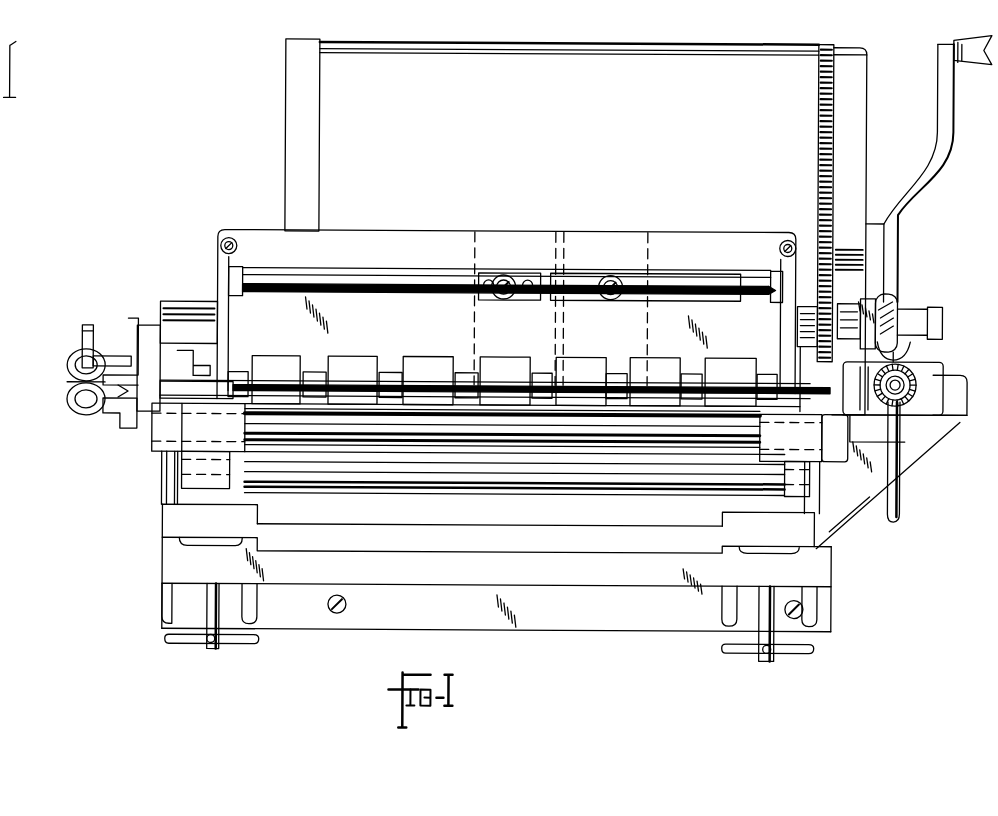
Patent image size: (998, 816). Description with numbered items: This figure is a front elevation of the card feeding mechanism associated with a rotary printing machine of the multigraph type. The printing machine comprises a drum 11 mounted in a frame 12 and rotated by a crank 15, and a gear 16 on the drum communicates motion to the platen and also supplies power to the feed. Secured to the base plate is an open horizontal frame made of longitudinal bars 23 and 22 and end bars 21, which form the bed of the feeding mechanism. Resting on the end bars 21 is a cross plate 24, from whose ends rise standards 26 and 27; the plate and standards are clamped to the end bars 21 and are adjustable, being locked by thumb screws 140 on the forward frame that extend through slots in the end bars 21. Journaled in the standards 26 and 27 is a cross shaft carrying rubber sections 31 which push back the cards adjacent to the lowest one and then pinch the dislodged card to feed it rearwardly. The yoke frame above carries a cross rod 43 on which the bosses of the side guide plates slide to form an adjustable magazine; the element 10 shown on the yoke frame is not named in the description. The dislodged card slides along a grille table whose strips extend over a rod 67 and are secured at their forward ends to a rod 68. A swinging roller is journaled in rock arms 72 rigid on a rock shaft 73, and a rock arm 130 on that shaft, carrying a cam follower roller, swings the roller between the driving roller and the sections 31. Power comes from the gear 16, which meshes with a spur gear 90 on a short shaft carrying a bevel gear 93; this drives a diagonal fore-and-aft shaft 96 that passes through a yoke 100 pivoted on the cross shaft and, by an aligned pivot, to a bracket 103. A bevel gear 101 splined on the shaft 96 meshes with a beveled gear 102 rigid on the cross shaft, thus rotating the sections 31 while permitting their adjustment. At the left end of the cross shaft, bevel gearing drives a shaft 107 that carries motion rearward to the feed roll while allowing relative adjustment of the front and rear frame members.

The frame plate 10 is at (489, 320).
The drum 11 is at (552, 136).
The frame 12 is at (849, 231).
The crank 15 is at (927, 160).
The gear 16 is at (826, 188).
The end bars 21 is at (258, 602).
The longitudinal bar 22 is at (496, 587).
The longitudinal bar 23 is at (496, 612).
The cross plate 24 is at (488, 538).
The standard 26 is at (210, 566).
The standard 27 is at (868, 536).
The rubber sections 31 is at (278, 372).
The cross rod 43 is at (700, 302).
The rod 67 is at (595, 416).
The rod 68 is at (497, 382).
The rock arms 72 is at (765, 445).
The shaft 73 is at (502, 435).
The spur gear 90 is at (830, 298).
The bevel gear 93 is at (897, 292).
The diagonal fore-and-aft shaft 96 is at (900, 482).
The yoke 100 is at (915, 390).
The bevel gear 101 is at (935, 360).
The beveled gear 102 is at (884, 415).
The bracket 103 is at (960, 388).
The shaft 107 is at (92, 327).
The rock arm 130 is at (836, 438).
The thumb screws 140 is at (210, 612).